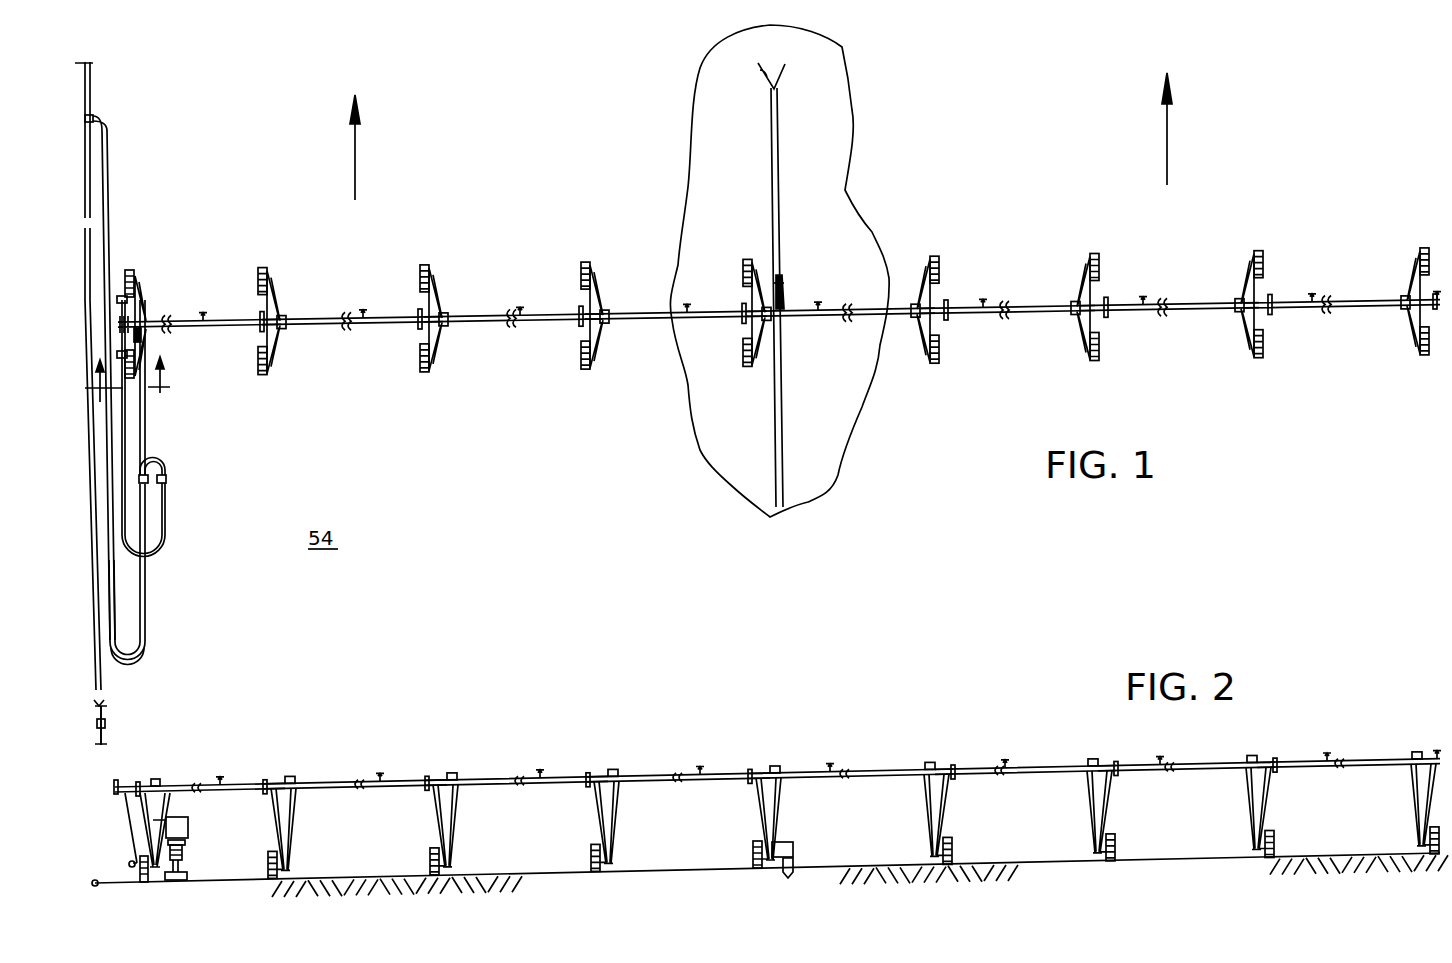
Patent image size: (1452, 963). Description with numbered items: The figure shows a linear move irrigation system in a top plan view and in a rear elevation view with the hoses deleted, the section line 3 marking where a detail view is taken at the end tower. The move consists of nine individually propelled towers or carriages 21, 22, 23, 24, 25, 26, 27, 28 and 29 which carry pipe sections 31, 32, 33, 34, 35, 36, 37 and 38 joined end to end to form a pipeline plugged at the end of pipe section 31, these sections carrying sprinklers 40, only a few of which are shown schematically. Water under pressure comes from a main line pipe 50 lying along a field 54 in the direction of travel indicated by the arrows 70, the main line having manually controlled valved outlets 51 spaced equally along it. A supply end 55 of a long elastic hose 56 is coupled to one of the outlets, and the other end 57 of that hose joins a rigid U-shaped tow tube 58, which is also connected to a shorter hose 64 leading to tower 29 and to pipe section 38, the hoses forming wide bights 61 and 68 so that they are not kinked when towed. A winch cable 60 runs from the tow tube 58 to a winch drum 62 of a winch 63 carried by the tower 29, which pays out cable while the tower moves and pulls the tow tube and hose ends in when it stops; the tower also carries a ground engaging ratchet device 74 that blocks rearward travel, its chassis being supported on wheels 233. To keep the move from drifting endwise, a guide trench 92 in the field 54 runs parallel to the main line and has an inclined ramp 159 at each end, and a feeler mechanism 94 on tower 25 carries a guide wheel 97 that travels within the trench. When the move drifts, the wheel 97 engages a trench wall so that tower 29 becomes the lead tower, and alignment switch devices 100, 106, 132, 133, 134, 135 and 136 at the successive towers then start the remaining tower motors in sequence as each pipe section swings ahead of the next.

In FIG. 1, the tower 21 is at (1406, 315).
In FIG. 2, the tower 21 is at (1406, 811).
In FIG. 1, the tower 22 is at (1240, 324).
In FIG. 2, the tower 22 is at (1267, 816).
In FIG. 1, the tower 23 is at (1077, 327).
In FIG. 2, the tower 23 is at (1107, 818).
In FIG. 1, the tower 24 is at (919, 333).
In FIG. 2, the tower 24 is at (950, 826).
In FIG. 1, the tower 25 is at (739, 330).
In FIG. 2, the tower 25 is at (787, 822).
In FIG. 1, the tower 26 is at (597, 289).
In FIG. 2, the tower 26 is at (622, 828).
In FIG. 1, the tower 27 is at (446, 289).
In FIG. 2, the tower 27 is at (462, 827).
In FIG. 1, the tower 28 is at (278, 292).
In FIG. 2, the tower 28 is at (295, 832).
In FIG. 1, the end tower 29 is at (147, 297).
In FIG. 2, the end tower 29 is at (195, 824).
In FIG. 1, the pipe section 31 is at (1355, 302).
In FIG. 2, the pipe section 31 is at (1377, 761).
In FIG. 1, the pipe section 32 is at (1200, 305).
In FIG. 2, the pipe section 32 is at (1207, 765).
In FIG. 1, the pipe section 33 is at (1031, 308).
In FIG. 2, the pipe section 33 is at (1042, 768).
In FIG. 1, the pipe section 34 is at (892, 310).
In FIG. 2, the pipe section 34 is at (817, 772).
In FIG. 1, the pipe section 35 is at (645, 321).
In FIG. 2, the pipe section 35 is at (657, 776).
In FIG. 1, the pipe section 36 is at (530, 323).
In FIG. 2, the pipe section 36 is at (490, 779).
In FIG. 1, the pipe section 37 is at (368, 326).
In FIG. 2, the pipe section 37 is at (335, 783).
In FIG. 1, the pipe section 38 is at (240, 328).
In FIG. 2, the pipe section 38 is at (200, 787).
In FIG. 1, the sprinkler 40 is at (203, 319).
In FIG. 2, the sprinkler 40 is at (220, 780).
In FIG. 1, the main line pipe 50 is at (92, 72).
In FIG. 2, the main line pipe 50 is at (95, 880).
In FIG. 1, the valved outlet 51 is at (91, 116).
In FIG. 2, the valved outlet 51 is at (105, 718).
In FIG. 1, the field 54 is at (707, 153).
In FIG. 2, the field 54 is at (381, 876).
In FIG. 1, the supply end 55 is at (107, 128).
In FIG. 1, the long elastic hose 56 is at (146, 606).
In FIG. 1, the other end of hose 57 is at (167, 483).
In FIG. 1, the tow tube 58 is at (165, 462).
In FIG. 1, the winch cable 60 is at (146, 432).
In FIG. 1, the bight 61 is at (136, 663).
In FIG. 2, the winch drum 62 is at (184, 852).
In FIG. 1, the winch 63 is at (150, 343).
In FIG. 2, the winch 63 is at (196, 843).
In FIG. 1, the shorter hose 64 is at (167, 505).
In FIG. 1, the bight 68 is at (165, 557).
In FIG. 1, the arrows 70 is at (357, 152).
In FIG. 2, the ground engaging ratchet device 74 is at (171, 880).
In FIG. 1, the guide trench 92 is at (778, 160).
In FIG. 2, the guide trench 92 is at (790, 872).
In FIG. 1, the feeler mechanism 94 is at (787, 302).
In FIG. 2, the feeler mechanism 94 is at (799, 848).
In FIG. 1, the guide wheel 97 is at (779, 290).
In FIG. 2, the guide wheel 97 is at (793, 862).
In FIG. 1, the alignment switch device 100 is at (262, 313).
In FIG. 2, the alignment switch device 100 is at (266, 782).
In FIG. 1, the alignment switch device 106 is at (420, 310).
In FIG. 2, the alignment switch device 106 is at (426, 778).
In FIG. 1, the alignment switch device 132 is at (1270, 297).
In FIG. 2, the alignment switch device 132 is at (1276, 765).
In FIG. 1, the alignment switch device 133 is at (1106, 300).
In FIG. 2, the alignment switch device 133 is at (1116, 768).
In FIG. 1, the alignment switch device 134 is at (946, 303).
In FIG. 2, the alignment switch device 134 is at (952, 771).
In FIG. 1, the alignment switch device 135 is at (743, 306).
In FIG. 2, the alignment switch device 135 is at (750, 772).
In FIG. 1, the alignment switch device 136 is at (580, 309).
In FIG. 2, the alignment switch device 136 is at (587, 775).
In FIG. 1, the ramp 159 is at (769, 78).
In FIG. 1, the wheels 233 is at (132, 272).
In FIG. 2, the wheels 233 is at (147, 868).
In FIG. 1, the section line 3- 3 is at (129, 386).